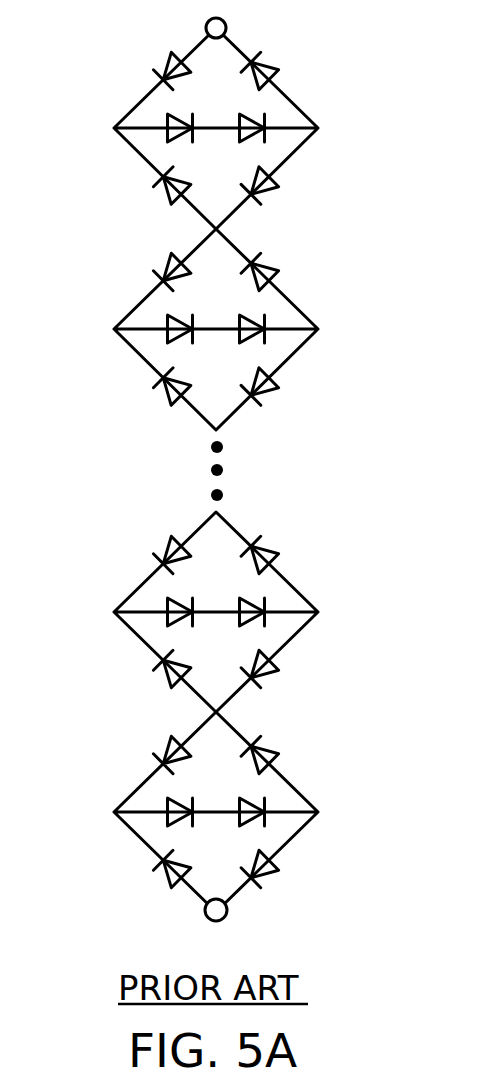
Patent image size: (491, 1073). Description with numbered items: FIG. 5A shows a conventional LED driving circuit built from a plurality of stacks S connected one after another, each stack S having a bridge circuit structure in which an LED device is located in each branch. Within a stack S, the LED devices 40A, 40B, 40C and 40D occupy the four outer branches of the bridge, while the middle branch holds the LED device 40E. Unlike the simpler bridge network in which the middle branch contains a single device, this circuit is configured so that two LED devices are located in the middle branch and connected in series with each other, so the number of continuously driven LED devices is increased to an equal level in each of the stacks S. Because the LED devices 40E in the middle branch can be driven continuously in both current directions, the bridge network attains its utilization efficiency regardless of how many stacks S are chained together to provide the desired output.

The LED device 40A is at (168, 66).
The LED device 40B is at (163, 188).
The LED device 40C is at (268, 65).
The LED device 40D is at (273, 190).
The LED device 40E is at (177, 115).
The rectifier stage S is at (75, 712).